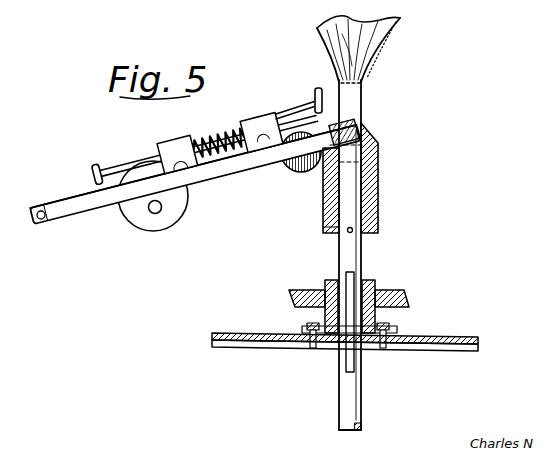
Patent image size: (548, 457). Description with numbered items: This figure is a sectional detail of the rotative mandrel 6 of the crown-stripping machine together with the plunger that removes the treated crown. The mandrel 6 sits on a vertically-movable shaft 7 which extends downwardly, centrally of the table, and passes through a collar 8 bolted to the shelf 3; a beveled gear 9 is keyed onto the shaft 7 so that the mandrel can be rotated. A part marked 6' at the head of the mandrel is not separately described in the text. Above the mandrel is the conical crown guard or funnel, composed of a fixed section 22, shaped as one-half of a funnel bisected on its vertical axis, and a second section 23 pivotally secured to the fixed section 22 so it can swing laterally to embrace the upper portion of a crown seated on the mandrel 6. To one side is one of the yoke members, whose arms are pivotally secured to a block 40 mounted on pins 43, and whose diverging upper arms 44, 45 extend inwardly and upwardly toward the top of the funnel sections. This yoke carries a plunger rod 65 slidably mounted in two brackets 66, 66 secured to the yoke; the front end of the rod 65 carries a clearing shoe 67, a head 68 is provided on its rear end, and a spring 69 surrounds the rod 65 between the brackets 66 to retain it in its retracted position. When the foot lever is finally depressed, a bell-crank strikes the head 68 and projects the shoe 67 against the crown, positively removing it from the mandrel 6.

The shelf 3 is at (447, 340).
The mandrel 6 is at (367, 178).
The pivot of socket 6' is at (375, 145).
The vertically-movable shaft 7 is at (355, 260).
The collar 8 is at (373, 318).
The beveled gear 9 is at (401, 293).
The fixed funnel section 22 is at (326, 36).
The movable funnel section 23 is at (382, 60).
The block 40 is at (153, 223).
The pins 43 is at (163, 208).
The diverging yoke arm 44 is at (298, 164).
The diverging yoke arm 45 is at (287, 150).
The plunger rod 65 is at (132, 163).
The brackets 66 is at (168, 147).
The clearing shoe 67 is at (316, 93).
The head 68 is at (100, 170).
The spring 69 is at (217, 140).